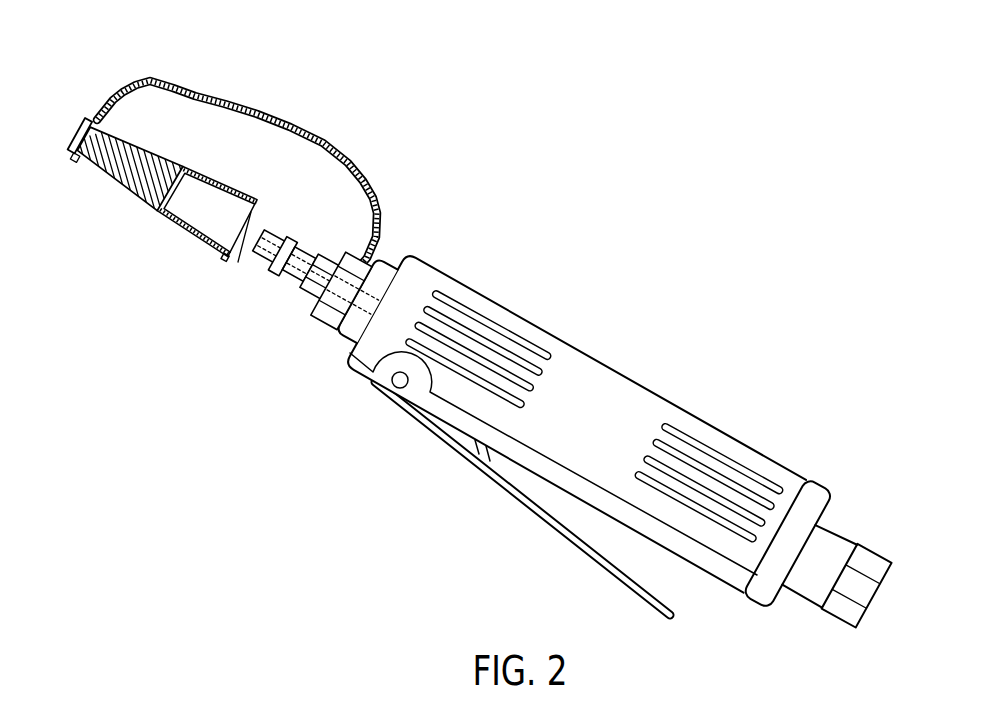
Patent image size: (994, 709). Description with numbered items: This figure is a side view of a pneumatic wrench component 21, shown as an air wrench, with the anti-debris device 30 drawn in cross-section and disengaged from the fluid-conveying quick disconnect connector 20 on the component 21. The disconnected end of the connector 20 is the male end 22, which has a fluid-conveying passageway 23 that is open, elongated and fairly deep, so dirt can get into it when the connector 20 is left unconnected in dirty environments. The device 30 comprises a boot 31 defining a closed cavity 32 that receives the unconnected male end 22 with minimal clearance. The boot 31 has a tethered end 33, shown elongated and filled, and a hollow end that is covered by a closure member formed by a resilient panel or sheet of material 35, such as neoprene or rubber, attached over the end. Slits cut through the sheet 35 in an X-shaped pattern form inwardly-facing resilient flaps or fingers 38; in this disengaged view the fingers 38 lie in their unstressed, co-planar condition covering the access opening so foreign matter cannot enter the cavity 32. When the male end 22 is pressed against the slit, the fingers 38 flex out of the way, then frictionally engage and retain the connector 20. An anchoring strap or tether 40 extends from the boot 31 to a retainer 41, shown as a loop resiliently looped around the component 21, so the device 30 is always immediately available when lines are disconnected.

The quick disconnect connector 20 is at (298, 277).
The fluid-using/conveying component 21 is at (560, 332).
The male end 22 is at (272, 251).
The fluid-conveying passageway 23 is at (309, 271).
The anti-debris device 30 is at (206, 317).
The boot 31 is at (206, 211).
The cavity 32 is at (208, 210).
The tethered end 33 is at (206, 317).
The resilient panel/sheet of material 35 is at (225, 257).
The resilient flaps or fingers 38 is at (252, 218).
The anchoring strap or tether 40 is at (174, 84).
The retainer 41 is at (351, 296).